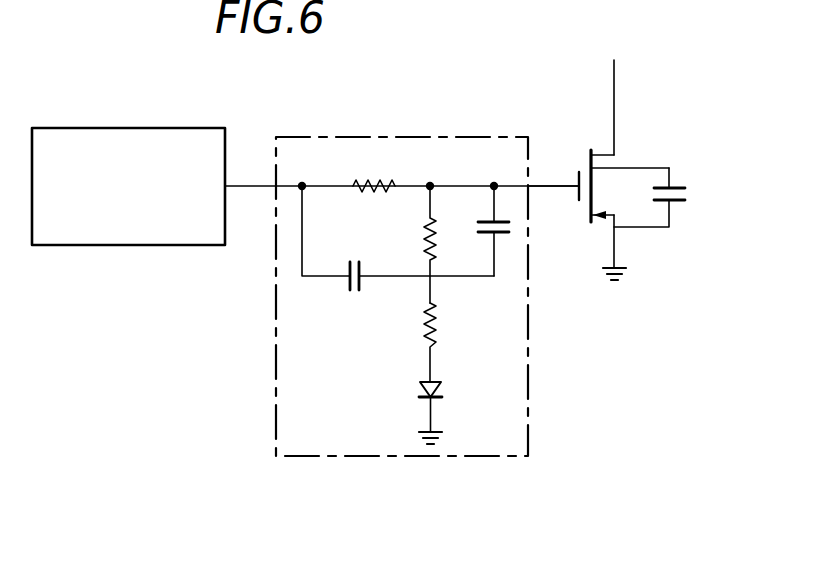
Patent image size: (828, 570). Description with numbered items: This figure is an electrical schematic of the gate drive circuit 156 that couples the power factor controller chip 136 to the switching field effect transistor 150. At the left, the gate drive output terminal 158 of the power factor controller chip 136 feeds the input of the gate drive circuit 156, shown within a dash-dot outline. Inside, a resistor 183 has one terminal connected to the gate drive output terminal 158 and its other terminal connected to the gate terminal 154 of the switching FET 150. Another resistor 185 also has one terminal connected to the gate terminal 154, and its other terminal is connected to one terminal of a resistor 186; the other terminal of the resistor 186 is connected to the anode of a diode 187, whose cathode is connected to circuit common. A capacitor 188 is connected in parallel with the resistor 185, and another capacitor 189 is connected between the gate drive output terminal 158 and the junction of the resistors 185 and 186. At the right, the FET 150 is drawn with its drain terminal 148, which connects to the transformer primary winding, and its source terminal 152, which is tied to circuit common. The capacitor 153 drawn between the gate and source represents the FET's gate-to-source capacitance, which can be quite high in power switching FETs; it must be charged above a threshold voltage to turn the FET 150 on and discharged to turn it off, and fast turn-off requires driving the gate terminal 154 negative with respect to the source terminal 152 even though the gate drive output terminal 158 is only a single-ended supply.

The power factor controller chip 136 is at (143, 127).
The gate drive output terminal 158 is at (226, 183).
The gate drive circuit 156 is at (437, 135).
The resistor 183 is at (368, 182).
The resistor 185 is at (424, 236).
The resistor 186 is at (436, 322).
The diode 187 is at (420, 392).
The capacitor 188 is at (482, 220).
The capacitor 189 is at (348, 290).
The switching field effect transistor 150 is at (552, 150).
The drain terminal 148 is at (614, 137).
The gate terminal 154 is at (551, 190).
The gate-to-source capacitance 153 is at (669, 215).
The source terminal 152 is at (614, 250).